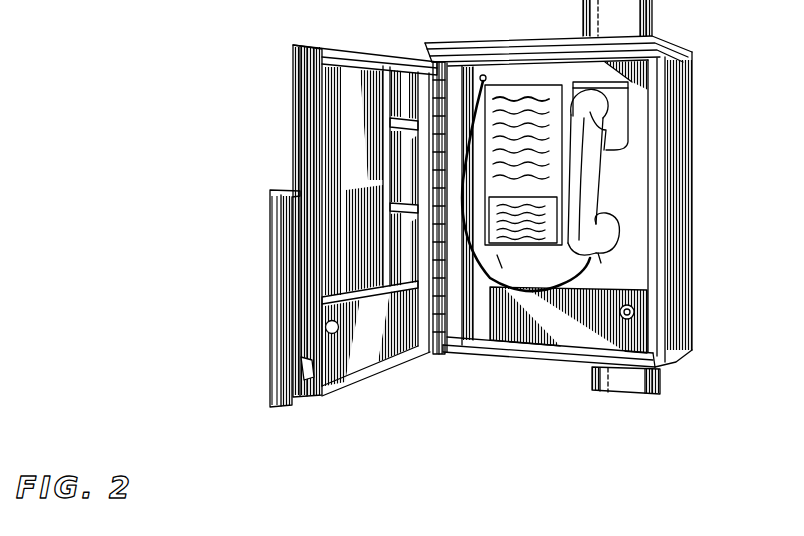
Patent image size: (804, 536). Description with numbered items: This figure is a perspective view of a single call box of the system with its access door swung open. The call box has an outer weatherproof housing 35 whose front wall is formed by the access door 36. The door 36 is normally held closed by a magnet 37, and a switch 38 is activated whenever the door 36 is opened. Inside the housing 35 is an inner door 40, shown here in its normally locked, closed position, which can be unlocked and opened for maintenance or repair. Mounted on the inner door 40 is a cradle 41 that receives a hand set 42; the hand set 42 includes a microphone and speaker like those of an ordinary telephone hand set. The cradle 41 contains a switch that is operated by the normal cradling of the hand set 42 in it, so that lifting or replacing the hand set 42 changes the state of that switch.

The outer weatherproof housing 35 is at (693, 297).
The access door 36 is at (303, 79).
The magnet 37 is at (335, 333).
The switch 38 is at (619, 313).
The inner door 40 is at (540, 349).
The cradle 41 is at (620, 144).
The hand set 42 is at (596, 190).